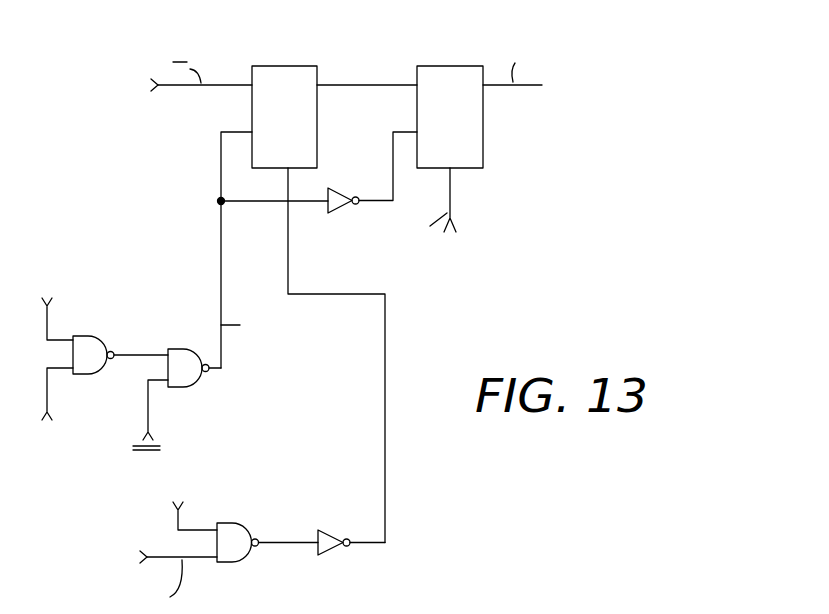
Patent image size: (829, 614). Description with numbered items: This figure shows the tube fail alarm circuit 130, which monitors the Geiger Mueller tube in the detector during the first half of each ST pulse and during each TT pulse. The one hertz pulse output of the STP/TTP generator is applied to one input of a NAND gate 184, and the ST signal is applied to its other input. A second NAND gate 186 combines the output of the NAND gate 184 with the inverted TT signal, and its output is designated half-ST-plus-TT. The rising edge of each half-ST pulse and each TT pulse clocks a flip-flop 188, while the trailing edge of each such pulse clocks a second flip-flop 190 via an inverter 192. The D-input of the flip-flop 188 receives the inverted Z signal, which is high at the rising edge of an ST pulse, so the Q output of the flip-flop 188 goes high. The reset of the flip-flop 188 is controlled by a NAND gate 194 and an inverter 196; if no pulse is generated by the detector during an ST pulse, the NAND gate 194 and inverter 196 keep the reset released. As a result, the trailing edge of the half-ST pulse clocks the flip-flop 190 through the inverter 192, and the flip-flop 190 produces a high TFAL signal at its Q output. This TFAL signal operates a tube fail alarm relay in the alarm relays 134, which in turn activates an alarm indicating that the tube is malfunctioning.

The tube fail alarm circuit 130 is at (370, 33).
The alarm relays 134 is at (628, 123).
The NAND gate 184 is at (90, 336).
The NAND gate 186 is at (187, 349).
The flip-flop 188 is at (273, 66).
The flip-flop 190 is at (437, 66).
The inverter 192 is at (376, 160).
The NAND gate 194 is at (225, 523).
The inverter 196 is at (358, 503).